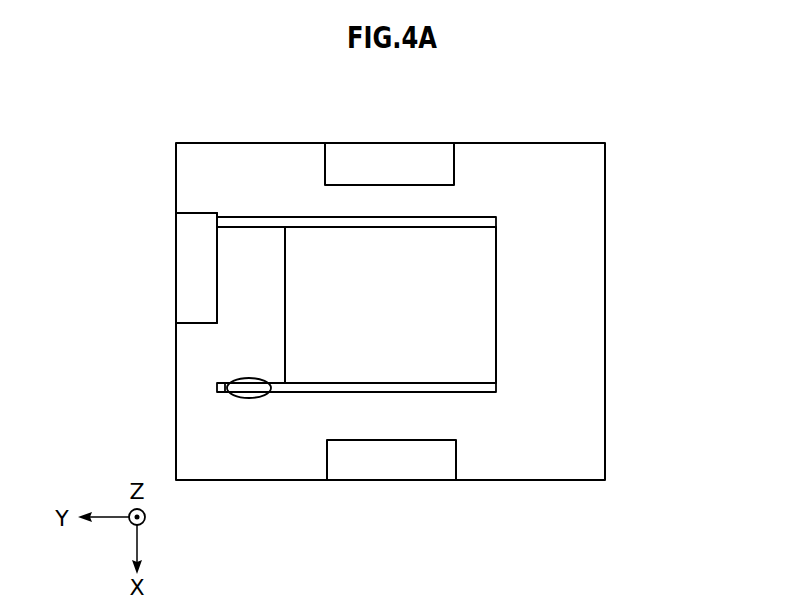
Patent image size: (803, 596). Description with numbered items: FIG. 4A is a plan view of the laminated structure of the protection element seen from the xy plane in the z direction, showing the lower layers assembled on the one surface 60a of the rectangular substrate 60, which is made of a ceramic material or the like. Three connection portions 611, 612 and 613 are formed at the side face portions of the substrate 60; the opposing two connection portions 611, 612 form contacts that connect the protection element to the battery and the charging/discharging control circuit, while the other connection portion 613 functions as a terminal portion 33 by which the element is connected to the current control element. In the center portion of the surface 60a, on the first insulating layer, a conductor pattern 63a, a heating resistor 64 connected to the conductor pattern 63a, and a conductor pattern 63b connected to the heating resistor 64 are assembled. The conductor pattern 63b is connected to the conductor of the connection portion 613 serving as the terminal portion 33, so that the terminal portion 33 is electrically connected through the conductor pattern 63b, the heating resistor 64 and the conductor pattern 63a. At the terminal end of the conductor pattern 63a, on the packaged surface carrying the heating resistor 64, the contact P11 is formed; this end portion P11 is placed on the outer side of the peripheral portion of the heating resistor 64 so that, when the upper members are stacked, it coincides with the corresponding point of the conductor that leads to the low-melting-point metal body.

The substrate 60 is at (606, 421).
The one surface of the substrate 60a is at (588, 363).
The connection portion 611 is at (407, 162).
The connection portion 612 is at (389, 462).
The connection portion 613 is at (190, 248).
The terminal portion 33 is at (152, 268).
The conductor pattern 63a is at (487, 387).
The conductor pattern 63b is at (477, 223).
The heating resistor 64 is at (315, 262).
The end portion of the conductor pattern P11 is at (248, 392).